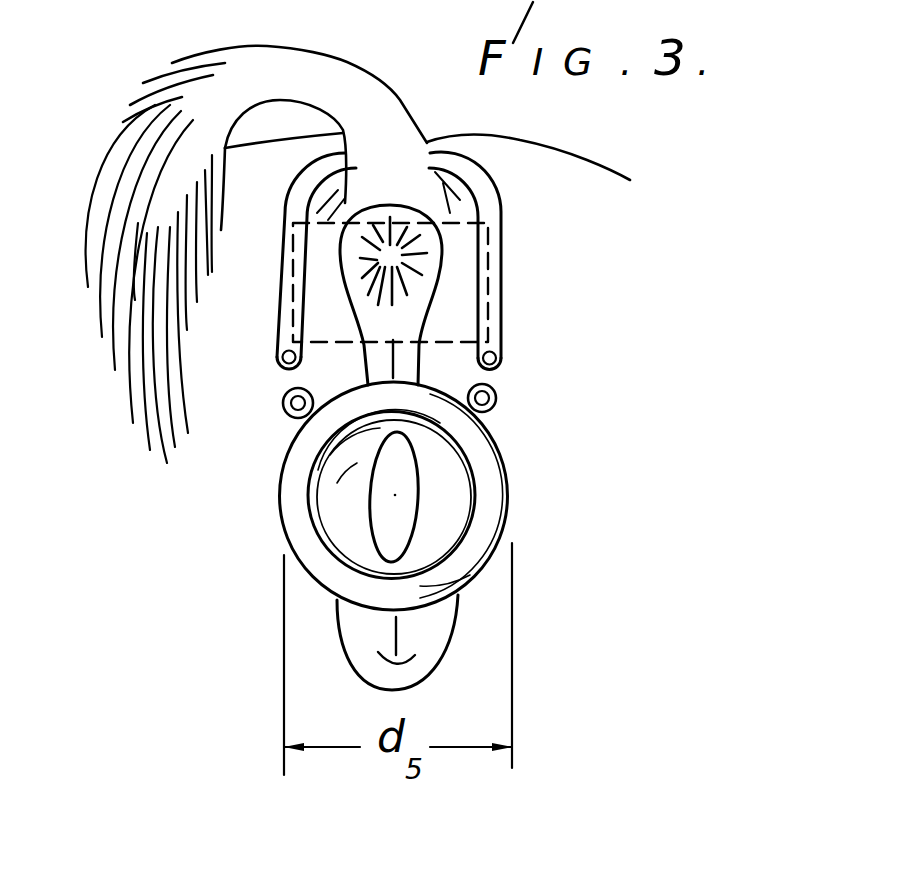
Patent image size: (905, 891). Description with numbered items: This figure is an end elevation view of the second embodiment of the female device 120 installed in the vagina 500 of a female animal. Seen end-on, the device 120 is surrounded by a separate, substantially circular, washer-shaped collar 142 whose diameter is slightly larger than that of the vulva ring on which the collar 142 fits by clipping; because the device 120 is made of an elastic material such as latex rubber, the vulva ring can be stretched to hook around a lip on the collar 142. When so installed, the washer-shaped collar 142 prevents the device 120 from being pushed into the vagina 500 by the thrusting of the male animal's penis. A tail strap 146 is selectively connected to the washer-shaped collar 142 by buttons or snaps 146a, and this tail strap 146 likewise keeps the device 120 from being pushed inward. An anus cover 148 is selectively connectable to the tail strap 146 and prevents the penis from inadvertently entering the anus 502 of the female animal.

The female device 120 is at (441, 536).
The washer-shaped collar 142 is at (320, 567).
The tail strap 146 is at (502, 278).
The buttons or snaps 146a is at (505, 397).
The anus cover 148 is at (457, 263).
The vagina 500 is at (387, 506).
The anus 502 is at (392, 256).